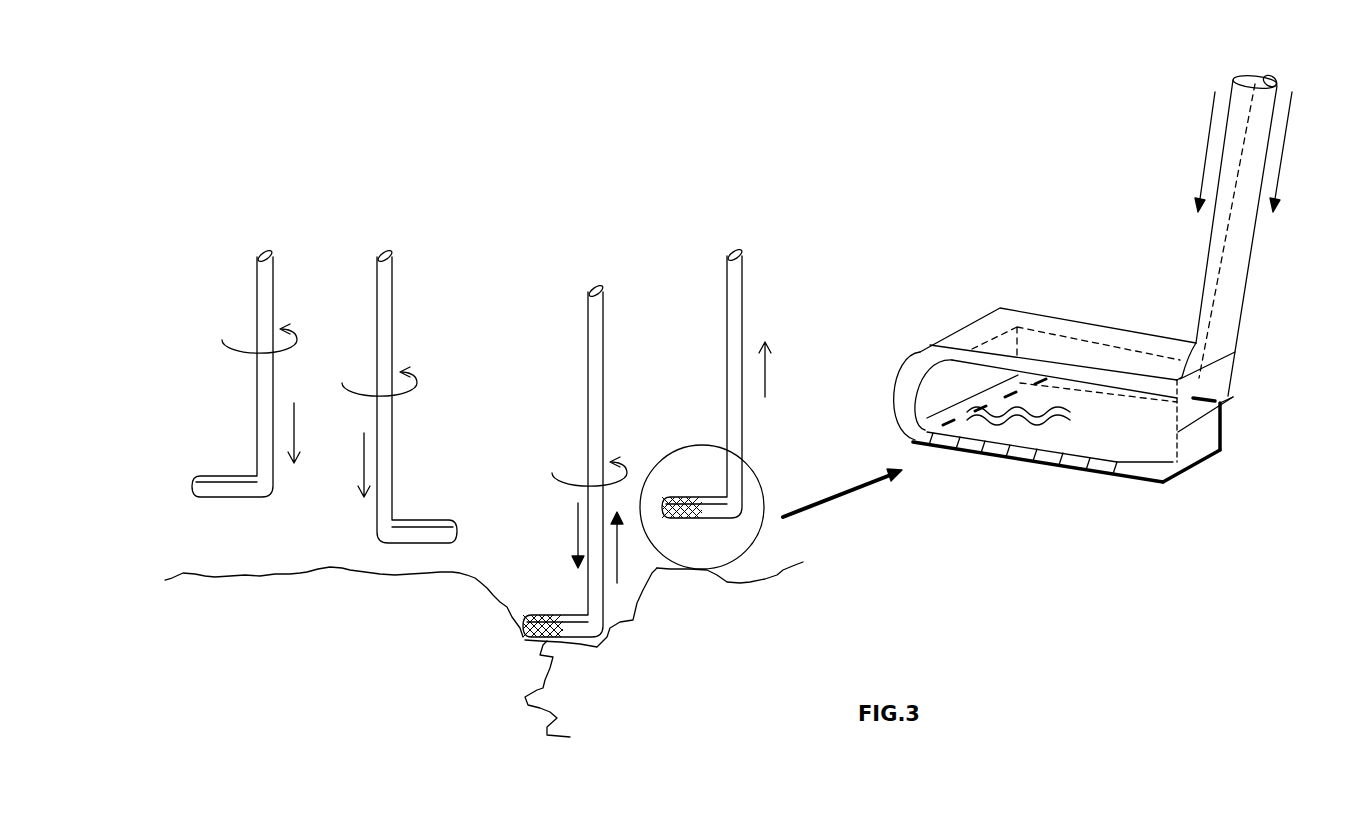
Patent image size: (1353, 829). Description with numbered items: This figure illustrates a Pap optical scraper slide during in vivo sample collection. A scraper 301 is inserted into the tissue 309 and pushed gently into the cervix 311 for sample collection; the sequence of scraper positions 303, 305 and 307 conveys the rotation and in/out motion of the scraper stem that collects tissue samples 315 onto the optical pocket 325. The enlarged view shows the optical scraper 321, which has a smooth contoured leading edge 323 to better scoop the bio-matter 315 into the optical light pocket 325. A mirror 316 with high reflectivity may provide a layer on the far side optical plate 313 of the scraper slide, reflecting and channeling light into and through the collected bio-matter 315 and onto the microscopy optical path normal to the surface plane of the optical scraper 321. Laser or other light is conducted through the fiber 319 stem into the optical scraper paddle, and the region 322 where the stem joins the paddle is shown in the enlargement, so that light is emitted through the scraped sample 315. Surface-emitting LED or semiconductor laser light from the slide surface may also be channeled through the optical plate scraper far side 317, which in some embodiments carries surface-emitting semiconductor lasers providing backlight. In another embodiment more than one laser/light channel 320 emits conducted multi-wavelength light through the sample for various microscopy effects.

The scraper 301 is at (258, 287).
The sampling tool at second position 303 is at (377, 295).
The sampling tool inserted into ground 305 is at (602, 375).
The sampling tool withdrawn with sample 307 is at (728, 325).
The tissue 309 is at (452, 574).
The cervix 311 is at (543, 688).
The far side optical plate 313 is at (1012, 452).
The tissue sample 315 is at (1083, 435).
The mirror 316 is at (1145, 478).
The optical plate scraper far side 317 is at (1198, 445).
The fiber stem 319 is at (1233, 297).
The laser/light channel 320 is at (1217, 265).
The optical scraper 321 is at (1000, 308).
The bend between shaft and chamber 322 is at (1177, 357).
The smooth contoured leading edge 323 is at (953, 360).
The optical pocket 325 is at (947, 390).